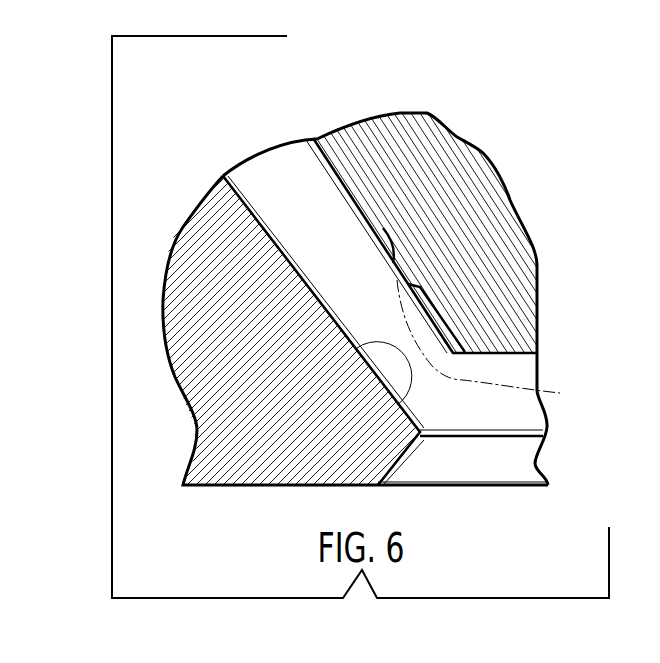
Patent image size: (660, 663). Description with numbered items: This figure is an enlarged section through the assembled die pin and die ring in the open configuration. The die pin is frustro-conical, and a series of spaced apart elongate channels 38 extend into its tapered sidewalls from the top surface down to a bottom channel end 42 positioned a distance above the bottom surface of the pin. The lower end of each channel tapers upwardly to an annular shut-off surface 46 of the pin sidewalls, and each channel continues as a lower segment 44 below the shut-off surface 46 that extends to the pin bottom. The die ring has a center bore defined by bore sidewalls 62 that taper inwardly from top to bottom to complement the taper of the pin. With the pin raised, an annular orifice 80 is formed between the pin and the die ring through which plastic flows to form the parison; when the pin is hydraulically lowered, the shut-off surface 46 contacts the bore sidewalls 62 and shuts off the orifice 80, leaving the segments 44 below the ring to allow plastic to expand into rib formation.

The elongate channel 38 is at (370, 212).
The bottom channel end 42 is at (391, 244).
The lower channel segment 44 is at (440, 321).
The shut-off surface 46 is at (560, 393).
The bore sidewalls 62 is at (374, 417).
The annular orifice 80 is at (447, 413).